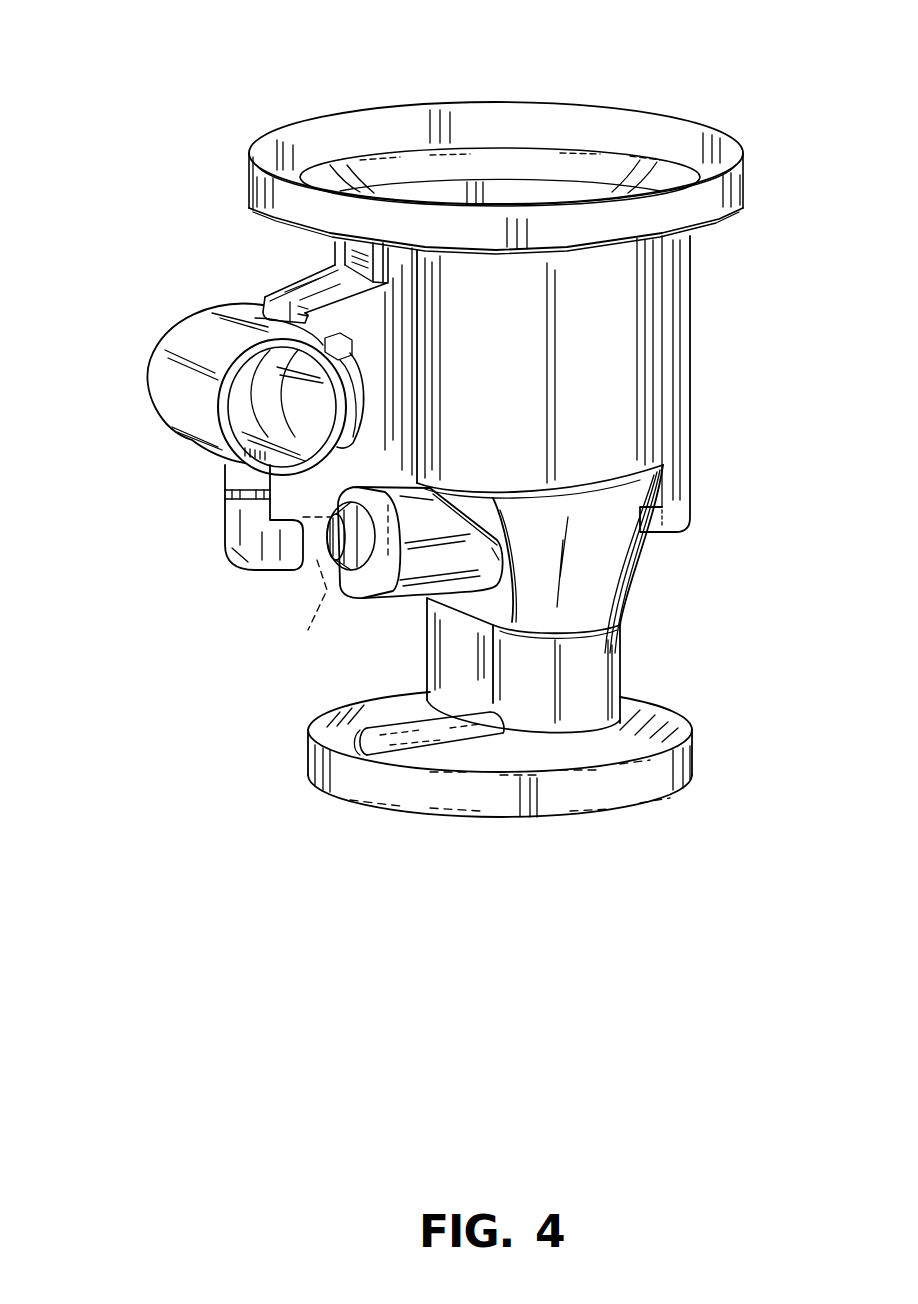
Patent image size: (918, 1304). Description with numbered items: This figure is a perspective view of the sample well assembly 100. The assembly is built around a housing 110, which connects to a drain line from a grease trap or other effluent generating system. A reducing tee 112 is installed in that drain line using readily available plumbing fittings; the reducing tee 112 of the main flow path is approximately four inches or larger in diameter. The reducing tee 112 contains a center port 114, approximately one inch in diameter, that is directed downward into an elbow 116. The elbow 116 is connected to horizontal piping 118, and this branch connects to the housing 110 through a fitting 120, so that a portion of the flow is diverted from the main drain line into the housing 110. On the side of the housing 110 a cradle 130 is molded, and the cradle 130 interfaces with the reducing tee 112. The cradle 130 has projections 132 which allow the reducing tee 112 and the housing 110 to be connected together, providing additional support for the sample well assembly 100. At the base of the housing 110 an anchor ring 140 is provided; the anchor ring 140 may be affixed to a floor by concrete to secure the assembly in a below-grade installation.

The sample well assembly 100 is at (708, 62).
The housing 110 is at (628, 345).
The reducing tee 112 is at (168, 375).
The center port 114 is at (167, 417).
The elbow 116 is at (277, 572).
The horizontal piping 118 is at (308, 628).
The fitting 120 is at (346, 598).
The cradle 130 is at (352, 313).
The projections 132 is at (265, 298).
The anchor ring 140 is at (688, 718).